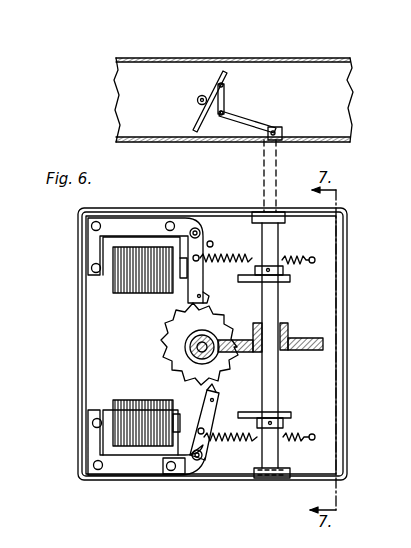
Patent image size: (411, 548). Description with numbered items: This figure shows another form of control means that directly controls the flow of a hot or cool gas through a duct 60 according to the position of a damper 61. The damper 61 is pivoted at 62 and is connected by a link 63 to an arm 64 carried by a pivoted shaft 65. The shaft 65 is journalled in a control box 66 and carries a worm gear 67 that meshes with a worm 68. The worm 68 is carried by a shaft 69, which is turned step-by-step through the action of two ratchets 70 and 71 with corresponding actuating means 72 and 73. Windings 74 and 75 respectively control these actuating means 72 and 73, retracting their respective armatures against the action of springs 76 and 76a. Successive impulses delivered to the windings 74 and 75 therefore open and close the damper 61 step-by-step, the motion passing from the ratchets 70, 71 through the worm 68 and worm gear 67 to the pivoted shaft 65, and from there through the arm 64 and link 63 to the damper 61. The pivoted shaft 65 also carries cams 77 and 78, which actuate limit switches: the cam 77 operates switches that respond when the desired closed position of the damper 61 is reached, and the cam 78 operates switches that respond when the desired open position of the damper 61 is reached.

The duct 60 is at (260, 78).
The damper 61 is at (218, 86).
The pivot 62 is at (198, 102).
The link 63 is at (226, 103).
The arm 64 is at (248, 120).
The pivoted shaft 65 is at (280, 195).
The control box 66 is at (346, 376).
The worm gear 67 is at (285, 352).
The worm 68 is at (197, 350).
The shaft 69 is at (198, 346).
The ratchet 70 is at (220, 365).
The ratchet 71 is at (234, 337).
The actuating means 72 is at (88, 265).
The actuating means 73 is at (125, 462).
The winding 74 is at (133, 275).
The winding 75 is at (130, 420).
The spring 76 is at (232, 256).
The spring 76a is at (228, 445).
The cam 77 is at (290, 258).
The cam 78 is at (283, 414).